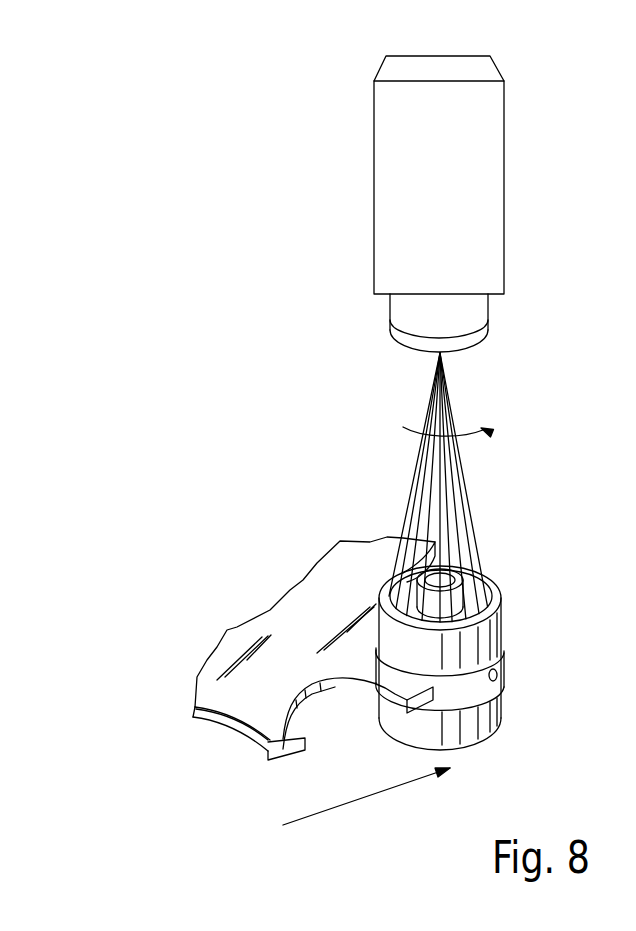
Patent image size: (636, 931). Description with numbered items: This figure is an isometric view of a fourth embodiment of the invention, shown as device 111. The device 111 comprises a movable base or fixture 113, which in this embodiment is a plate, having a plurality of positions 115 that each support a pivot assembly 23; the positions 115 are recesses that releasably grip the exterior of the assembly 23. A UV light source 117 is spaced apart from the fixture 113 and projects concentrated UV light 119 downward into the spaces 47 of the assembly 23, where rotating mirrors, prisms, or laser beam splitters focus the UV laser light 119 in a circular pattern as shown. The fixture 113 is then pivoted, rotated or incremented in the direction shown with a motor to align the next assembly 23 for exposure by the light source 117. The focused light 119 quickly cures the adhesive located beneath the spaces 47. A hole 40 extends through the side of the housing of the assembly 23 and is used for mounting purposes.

The device 111 is at (285, 265).
The UV light source 117 is at (387, 151).
The concentrated UV light 119 is at (427, 423).
The fixture 113 is at (300, 603).
The positions 115 is at (250, 718).
The pivot assembly 23 is at (494, 650).
The spaces 47 is at (493, 587).
The hole 40 is at (500, 675).